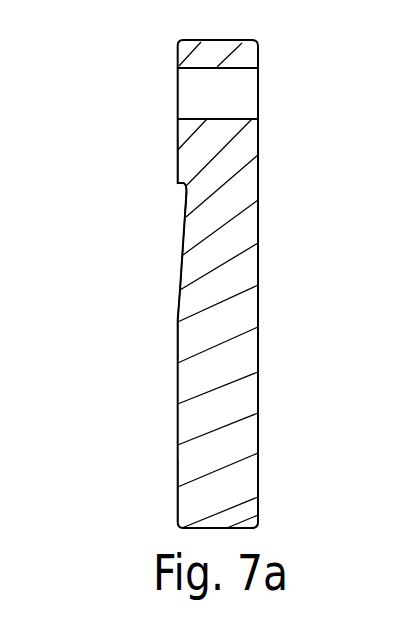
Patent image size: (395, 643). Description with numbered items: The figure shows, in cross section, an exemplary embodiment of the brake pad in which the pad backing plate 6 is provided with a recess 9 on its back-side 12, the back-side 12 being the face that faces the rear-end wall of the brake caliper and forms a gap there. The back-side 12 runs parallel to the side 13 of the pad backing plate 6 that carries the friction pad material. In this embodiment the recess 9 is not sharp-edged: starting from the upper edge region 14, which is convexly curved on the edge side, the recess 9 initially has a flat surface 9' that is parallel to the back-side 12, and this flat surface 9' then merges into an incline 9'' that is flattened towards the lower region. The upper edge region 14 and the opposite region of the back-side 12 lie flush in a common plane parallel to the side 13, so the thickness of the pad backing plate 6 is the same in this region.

The pad backing plate 6 is at (228, 288).
The recess 9 is at (140, 232).
The flat surface 9' is at (118, 261).
The incline 9'' is at (138, 335).
The back-side 12 is at (178, 488).
The side 13 is at (258, 438).
The upper edge region 14 is at (178, 152).